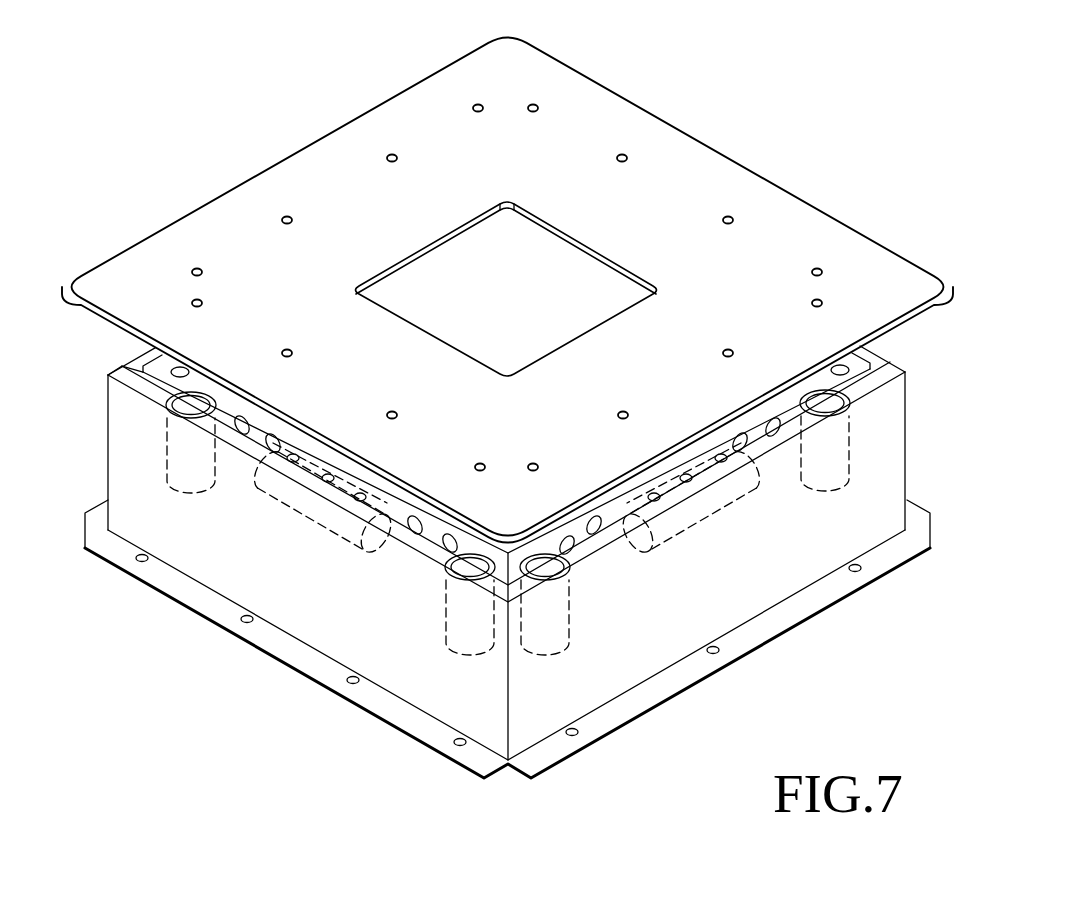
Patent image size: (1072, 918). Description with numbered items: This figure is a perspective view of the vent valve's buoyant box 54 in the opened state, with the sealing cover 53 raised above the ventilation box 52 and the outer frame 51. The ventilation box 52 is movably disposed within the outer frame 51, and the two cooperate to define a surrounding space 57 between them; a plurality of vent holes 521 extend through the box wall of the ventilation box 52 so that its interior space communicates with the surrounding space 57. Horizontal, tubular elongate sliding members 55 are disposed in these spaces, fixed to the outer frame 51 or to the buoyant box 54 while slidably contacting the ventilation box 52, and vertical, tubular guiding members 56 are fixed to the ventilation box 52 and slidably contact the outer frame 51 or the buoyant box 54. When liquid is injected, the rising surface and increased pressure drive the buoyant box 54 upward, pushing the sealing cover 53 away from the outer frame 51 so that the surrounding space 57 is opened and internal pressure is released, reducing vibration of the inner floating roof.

The outer frame 51 is at (925, 420).
The ventilation box 52 is at (577, 530).
The vent holes 521 is at (577, 530).
The sealing cover 53 is at (289, 172).
The buoyant box 54 is at (583, 248).
The elongate sliding members 55 is at (383, 508).
The guiding members 56 is at (195, 398).
The surrounding space 57 is at (152, 362).